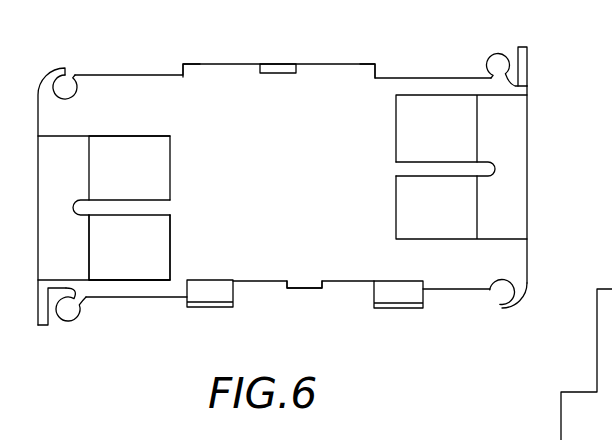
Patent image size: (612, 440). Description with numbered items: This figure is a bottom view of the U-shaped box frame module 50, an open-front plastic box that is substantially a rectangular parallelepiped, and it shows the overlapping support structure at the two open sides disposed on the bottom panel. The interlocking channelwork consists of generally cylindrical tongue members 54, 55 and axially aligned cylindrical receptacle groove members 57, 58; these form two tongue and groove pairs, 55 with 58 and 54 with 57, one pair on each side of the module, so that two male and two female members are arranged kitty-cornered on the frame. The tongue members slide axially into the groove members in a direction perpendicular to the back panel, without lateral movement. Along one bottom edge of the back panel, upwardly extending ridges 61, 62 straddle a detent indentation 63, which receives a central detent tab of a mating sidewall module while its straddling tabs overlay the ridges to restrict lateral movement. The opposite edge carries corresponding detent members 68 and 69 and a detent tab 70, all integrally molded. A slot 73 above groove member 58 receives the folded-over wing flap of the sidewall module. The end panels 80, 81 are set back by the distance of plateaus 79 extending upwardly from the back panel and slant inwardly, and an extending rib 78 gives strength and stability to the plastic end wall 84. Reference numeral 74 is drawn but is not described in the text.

The box frame module 50 is at (317, 176).
The tongue member 54 is at (72, 313).
The tongue member 55 is at (490, 63).
The receptacle groove member 57 is at (493, 297).
The receptacle groove member 58 is at (70, 72).
The ridge 61 is at (207, 63).
The ridge 62 is at (360, 64).
The detent indentation 63 is at (280, 62).
The detent member 68 is at (213, 307).
The detent member 69 is at (392, 308).
The detent tab 70 is at (303, 288).
The slot 73 is at (580, 375).
The tab 74 is at (530, 47).
The rib 78 is at (127, 199).
The plateau 79 is at (76, 157).
The panel 80 is at (400, 212).
The panel 81 is at (155, 252).
The end wall 84 is at (37, 315).